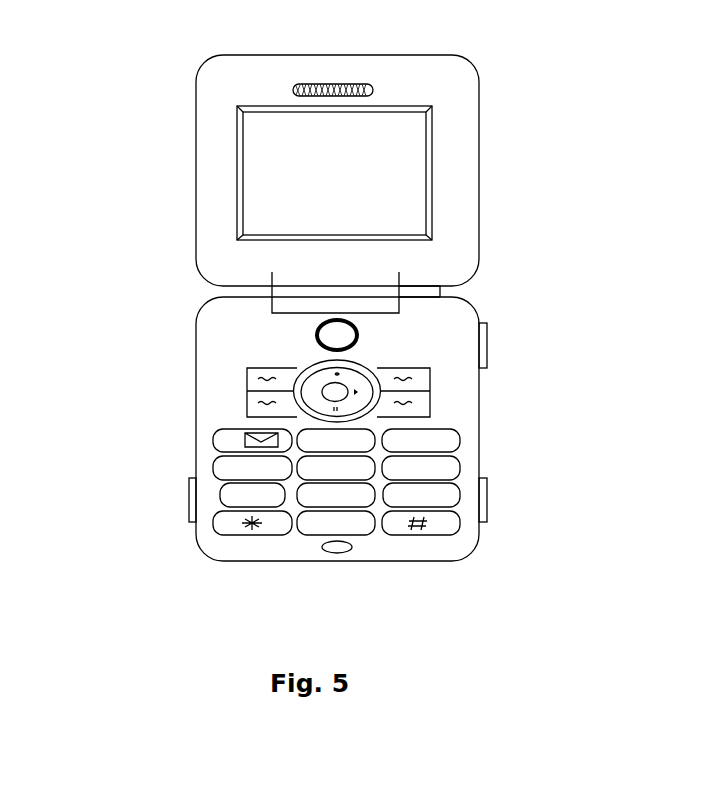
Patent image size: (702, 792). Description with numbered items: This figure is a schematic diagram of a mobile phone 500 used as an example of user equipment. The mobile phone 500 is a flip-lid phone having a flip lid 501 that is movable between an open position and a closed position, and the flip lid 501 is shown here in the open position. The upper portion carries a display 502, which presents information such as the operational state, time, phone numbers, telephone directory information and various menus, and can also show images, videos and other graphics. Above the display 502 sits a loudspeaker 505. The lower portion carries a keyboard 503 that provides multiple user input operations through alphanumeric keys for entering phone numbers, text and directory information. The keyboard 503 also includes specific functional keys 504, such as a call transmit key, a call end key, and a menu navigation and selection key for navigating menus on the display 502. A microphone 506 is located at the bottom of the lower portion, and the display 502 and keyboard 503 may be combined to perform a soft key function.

The mobile phone 500 is at (146, 106).
The flip lid 501 is at (196, 205).
The display 502 is at (252, 183).
The keyboard 503 is at (267, 548).
The specific functional keys 504 is at (318, 391).
The loudspeaker 505 is at (380, 91).
The microphone 506 is at (338, 555).